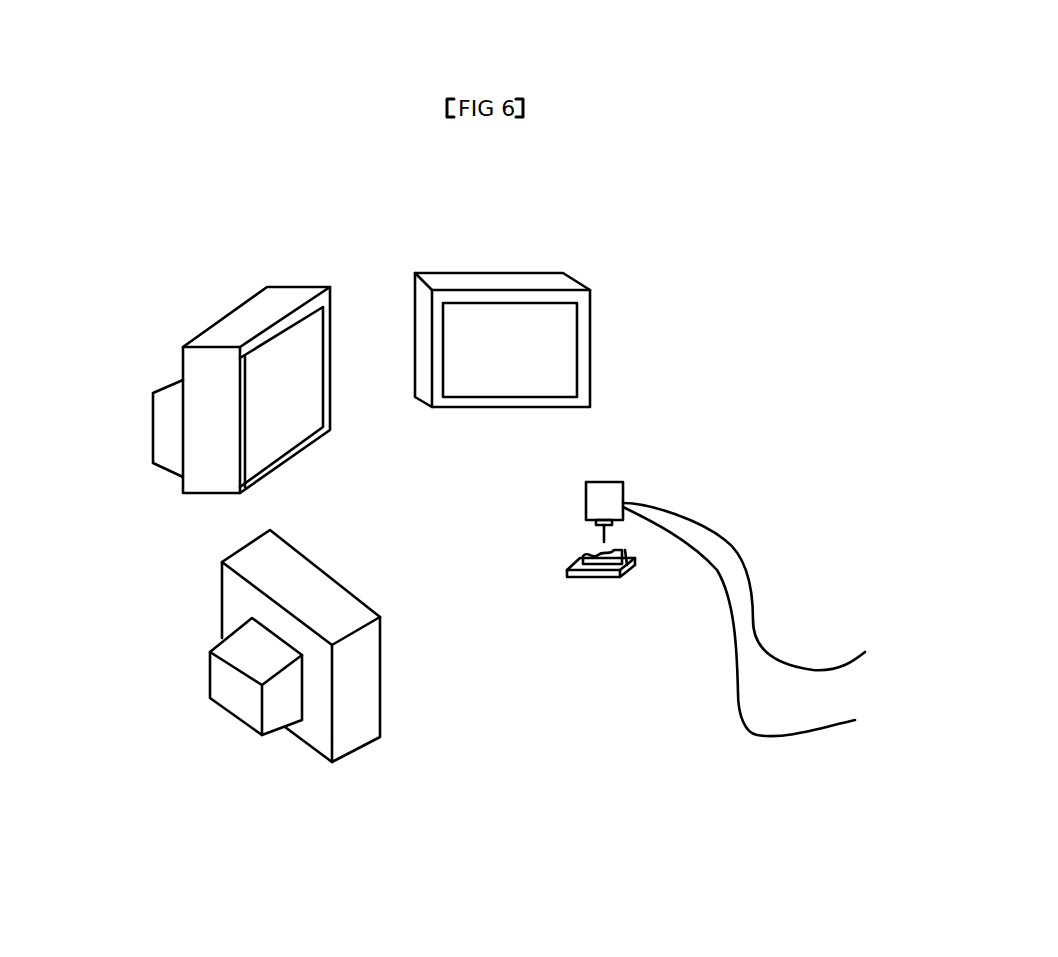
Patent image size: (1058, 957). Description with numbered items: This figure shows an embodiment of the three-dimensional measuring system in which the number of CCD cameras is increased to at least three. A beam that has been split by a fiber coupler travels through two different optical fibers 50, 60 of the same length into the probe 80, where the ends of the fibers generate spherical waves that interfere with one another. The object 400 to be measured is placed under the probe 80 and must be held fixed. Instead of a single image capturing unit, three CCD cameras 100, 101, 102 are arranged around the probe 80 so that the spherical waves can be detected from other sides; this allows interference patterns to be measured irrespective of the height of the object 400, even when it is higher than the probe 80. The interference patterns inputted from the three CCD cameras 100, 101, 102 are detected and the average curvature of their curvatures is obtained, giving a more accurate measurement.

The CCD camera 100 is at (223, 403).
The CCD camera 101 is at (363, 707).
The CCD camera 102 is at (542, 338).
The probe 80 is at (612, 503).
The object to be measured 400 is at (623, 560).
The optical fiber 60 is at (752, 582).
The optical fiber 50 is at (737, 687).